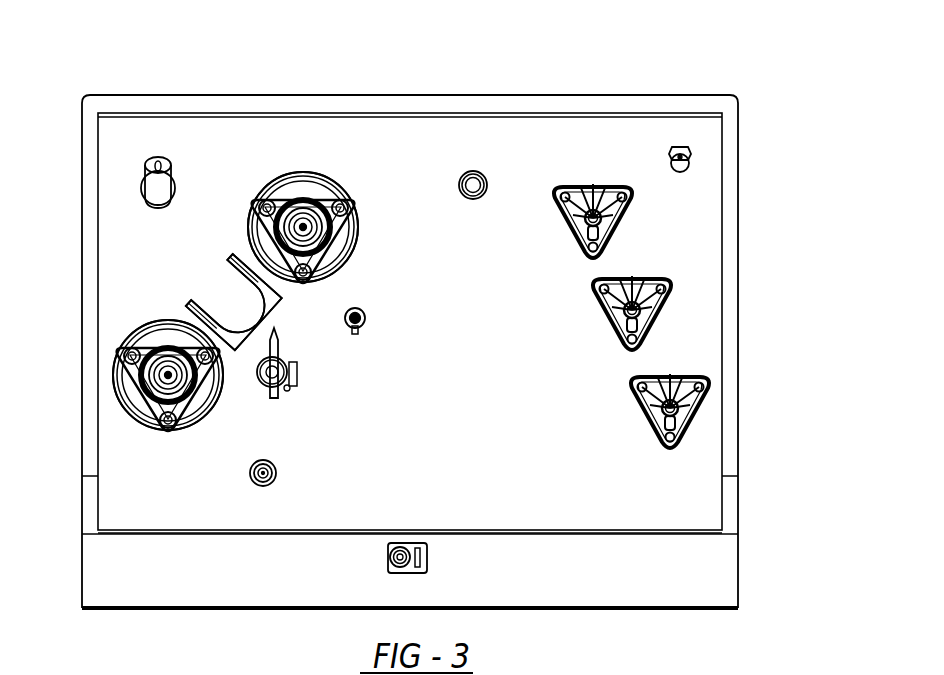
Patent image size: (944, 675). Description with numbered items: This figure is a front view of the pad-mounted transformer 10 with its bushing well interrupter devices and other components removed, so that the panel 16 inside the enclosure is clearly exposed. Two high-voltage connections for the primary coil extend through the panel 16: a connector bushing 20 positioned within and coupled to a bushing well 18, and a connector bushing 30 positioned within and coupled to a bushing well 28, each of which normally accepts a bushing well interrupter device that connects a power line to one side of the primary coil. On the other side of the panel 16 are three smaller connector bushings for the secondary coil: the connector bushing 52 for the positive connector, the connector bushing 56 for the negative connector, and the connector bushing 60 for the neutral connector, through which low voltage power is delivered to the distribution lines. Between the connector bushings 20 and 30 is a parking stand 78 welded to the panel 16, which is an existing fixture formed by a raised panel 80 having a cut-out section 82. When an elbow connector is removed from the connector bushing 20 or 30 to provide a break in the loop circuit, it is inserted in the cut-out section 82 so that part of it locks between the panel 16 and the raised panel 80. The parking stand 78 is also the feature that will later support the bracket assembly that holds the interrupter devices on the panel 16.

The transformer 10 is at (680, 69).
The panel 16 is at (693, 189).
The bushing well 18 is at (132, 397).
The connector bushing 20 is at (150, 340).
The bushing well 28 is at (340, 245).
The connector bushing 30 is at (327, 195).
The connector bushing 52 is at (615, 208).
The connector bushing 56 is at (660, 312).
The connector bushing 60 is at (690, 402).
The parking stand 78 is at (230, 282).
The raised panel 80 is at (260, 311).
The cut-out section 82 is at (193, 301).